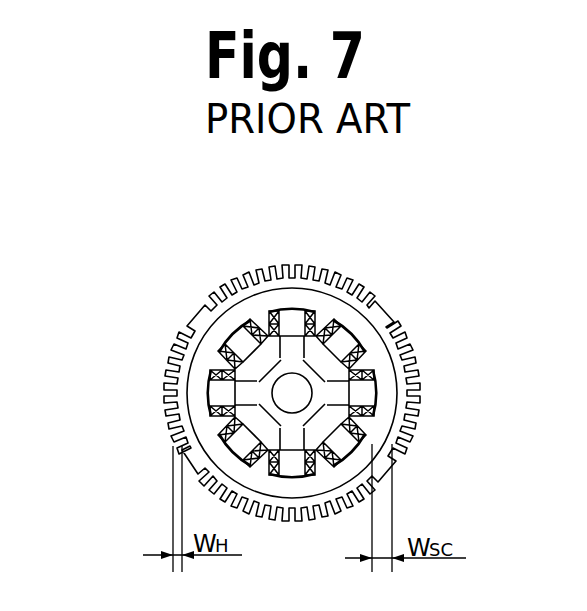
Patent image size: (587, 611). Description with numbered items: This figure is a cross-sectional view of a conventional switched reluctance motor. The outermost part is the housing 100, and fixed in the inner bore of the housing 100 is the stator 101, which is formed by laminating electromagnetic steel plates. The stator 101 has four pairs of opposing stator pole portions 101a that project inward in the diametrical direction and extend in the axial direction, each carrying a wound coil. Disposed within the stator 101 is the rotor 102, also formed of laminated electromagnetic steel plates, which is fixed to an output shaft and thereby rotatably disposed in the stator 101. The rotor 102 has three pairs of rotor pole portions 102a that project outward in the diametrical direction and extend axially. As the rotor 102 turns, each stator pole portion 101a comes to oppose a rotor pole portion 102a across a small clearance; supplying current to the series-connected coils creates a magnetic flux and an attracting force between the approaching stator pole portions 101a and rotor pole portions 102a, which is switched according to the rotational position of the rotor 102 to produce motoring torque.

The housing 100 is at (284, 270).
The stator 101 is at (223, 331).
The stator pole portions 101a is at (298, 327).
The rotor 102 is at (257, 403).
The rotor pole portions 102a is at (292, 354).